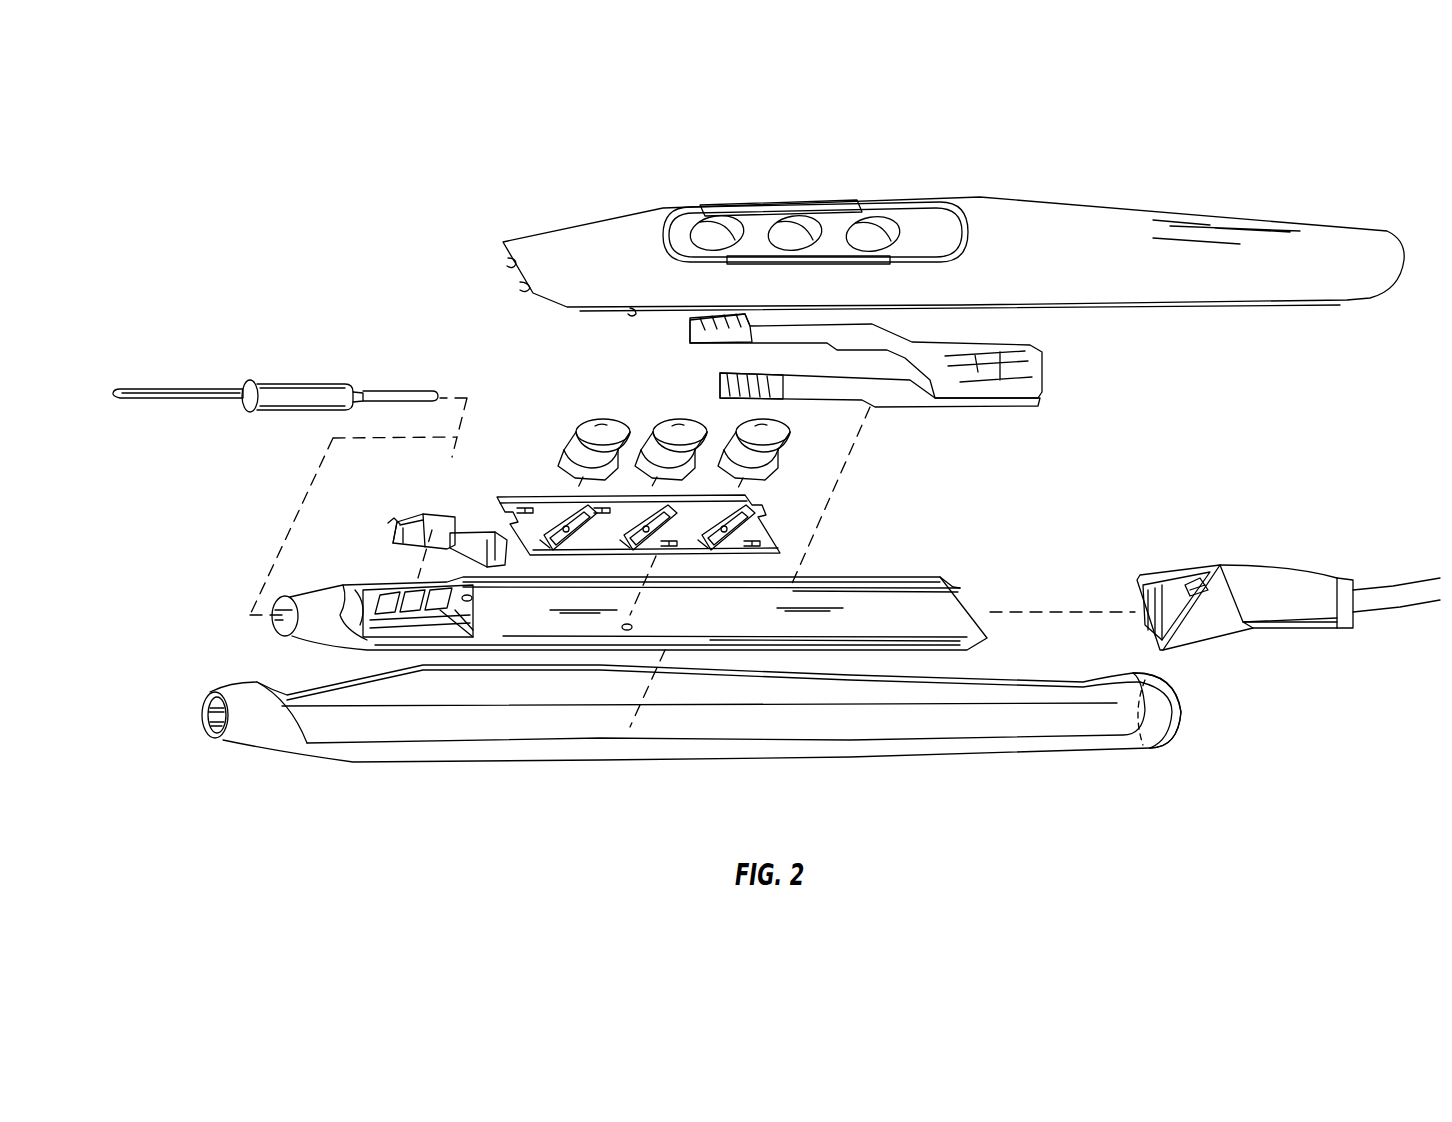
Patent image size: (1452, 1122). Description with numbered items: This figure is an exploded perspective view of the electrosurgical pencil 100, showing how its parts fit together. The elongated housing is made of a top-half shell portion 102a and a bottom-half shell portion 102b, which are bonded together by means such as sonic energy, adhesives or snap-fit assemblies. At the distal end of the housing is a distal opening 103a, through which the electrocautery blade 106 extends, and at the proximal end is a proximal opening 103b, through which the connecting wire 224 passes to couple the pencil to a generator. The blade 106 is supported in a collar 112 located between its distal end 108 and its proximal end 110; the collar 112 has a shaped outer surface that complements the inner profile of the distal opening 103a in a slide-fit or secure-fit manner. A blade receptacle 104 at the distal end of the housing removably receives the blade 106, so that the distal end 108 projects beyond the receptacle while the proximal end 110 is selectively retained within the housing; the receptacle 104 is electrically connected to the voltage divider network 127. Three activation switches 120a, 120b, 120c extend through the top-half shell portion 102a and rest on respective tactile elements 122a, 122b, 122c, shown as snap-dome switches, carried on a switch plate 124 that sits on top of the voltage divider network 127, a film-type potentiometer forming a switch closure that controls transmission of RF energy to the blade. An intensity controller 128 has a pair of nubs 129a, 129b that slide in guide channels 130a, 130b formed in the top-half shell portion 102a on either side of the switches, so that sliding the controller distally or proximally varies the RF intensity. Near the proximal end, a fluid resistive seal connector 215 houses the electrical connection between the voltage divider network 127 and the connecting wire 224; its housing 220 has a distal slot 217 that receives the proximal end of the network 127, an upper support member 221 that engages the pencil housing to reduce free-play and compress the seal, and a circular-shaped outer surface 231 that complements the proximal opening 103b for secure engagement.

The electrosurgical pencil 100 is at (1083, 127).
The top-half shell portion 102a is at (1078, 218).
The bottom-half shell portion 102b is at (1010, 748).
The distal opening 103a is at (203, 717).
The proximal opening 103b is at (1197, 712).
The blade receptacle 104 is at (436, 507).
The electrocautery blade 106 is at (195, 362).
The distal end 108 is at (200, 405).
The proximal end 110 is at (400, 387).
The collar 112 is at (290, 386).
The activation switch 120a is at (600, 420).
The activation switch 120b is at (685, 418).
The activation switch 120c is at (768, 426).
The tactile element 122a is at (558, 522).
The tactile element 122b is at (648, 527).
The tactile element 122c is at (725, 506).
The switch plate 124 is at (510, 493).
The voltage divider network 127 is at (945, 605).
The intensity controller 128 is at (1050, 341).
The nub 129a is at (690, 327).
The nub 129b is at (722, 380).
The guide channel 130a is at (746, 208).
The guide channel 130b is at (858, 255).
The fluid resistive seal connector 215 is at (1248, 541).
The distal slot 217 is at (1140, 600).
The housing 220 is at (1272, 583).
The upper support member 221 is at (1196, 585).
The connecting wire 224 is at (1390, 605).
The circular-shaped outer surface 231 is at (1340, 585).